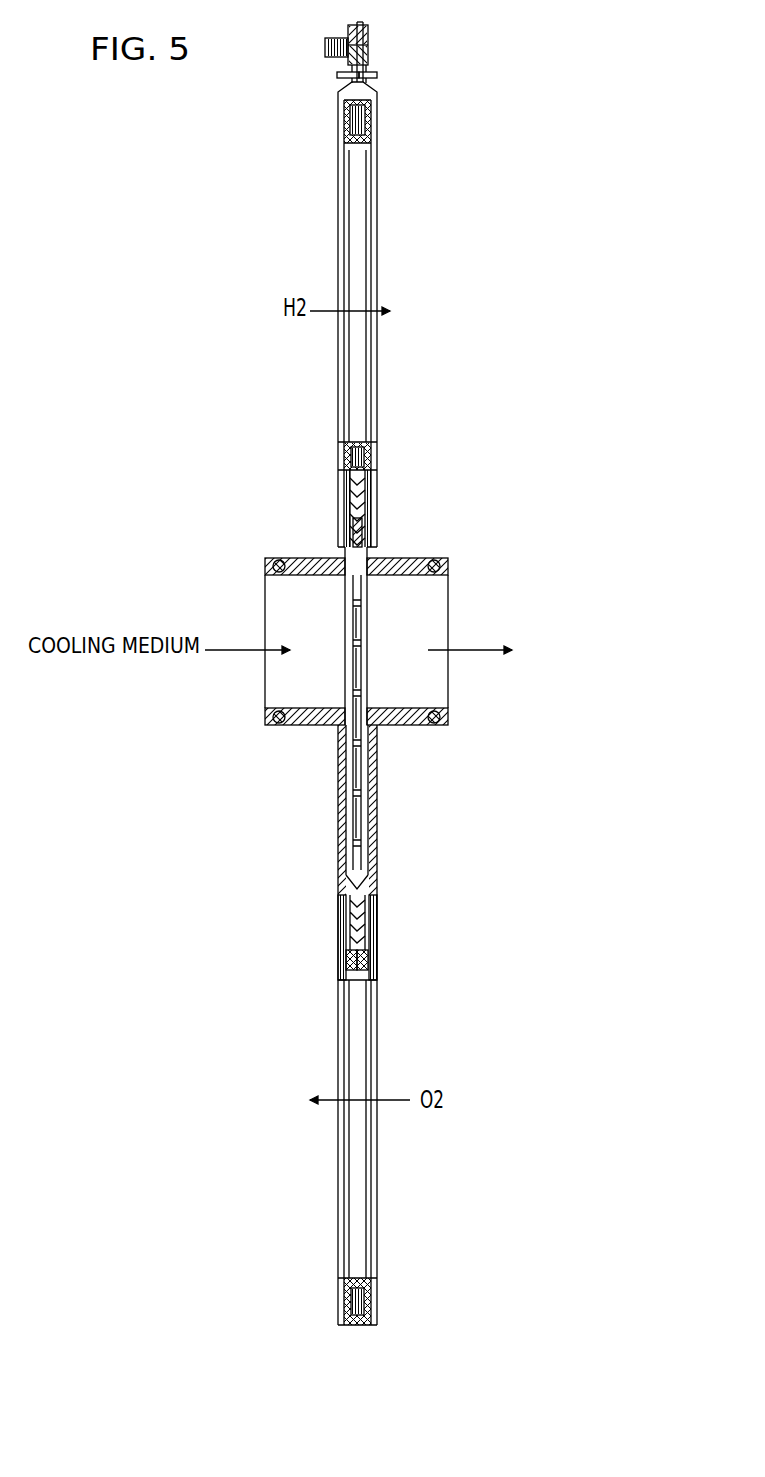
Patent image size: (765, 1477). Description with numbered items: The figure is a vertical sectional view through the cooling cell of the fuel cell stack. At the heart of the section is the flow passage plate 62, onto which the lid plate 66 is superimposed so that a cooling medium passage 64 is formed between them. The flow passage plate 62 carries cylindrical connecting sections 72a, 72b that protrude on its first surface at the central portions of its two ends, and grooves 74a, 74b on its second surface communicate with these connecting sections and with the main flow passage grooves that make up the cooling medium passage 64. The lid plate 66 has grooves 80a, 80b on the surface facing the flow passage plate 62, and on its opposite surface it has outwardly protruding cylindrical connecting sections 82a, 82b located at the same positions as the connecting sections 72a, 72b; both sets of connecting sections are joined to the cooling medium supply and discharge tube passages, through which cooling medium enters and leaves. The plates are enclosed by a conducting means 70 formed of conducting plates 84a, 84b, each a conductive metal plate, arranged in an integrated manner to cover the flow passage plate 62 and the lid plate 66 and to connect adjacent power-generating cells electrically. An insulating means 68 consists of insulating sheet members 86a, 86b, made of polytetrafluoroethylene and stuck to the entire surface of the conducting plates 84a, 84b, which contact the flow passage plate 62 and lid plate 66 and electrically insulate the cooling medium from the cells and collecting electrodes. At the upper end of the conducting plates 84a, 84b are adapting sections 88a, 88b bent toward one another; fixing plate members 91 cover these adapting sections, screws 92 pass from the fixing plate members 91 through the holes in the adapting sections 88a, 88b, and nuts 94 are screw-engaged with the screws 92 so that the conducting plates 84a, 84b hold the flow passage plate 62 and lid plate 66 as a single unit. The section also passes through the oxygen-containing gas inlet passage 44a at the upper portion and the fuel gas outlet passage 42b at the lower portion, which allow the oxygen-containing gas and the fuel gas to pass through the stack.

The nut 94 is at (343, 40).
The fixing plate member 91 is at (366, 26).
The screw 92 is at (368, 50).
The adapting section 88a is at (372, 75).
The adapting section 88b is at (341, 74).
The oxygen-containing gas inlet passage 44a is at (372, 166).
The insulating means 68 is at (360, 447).
The conducting means 70 is at (380, 476).
The connecting section 82a is at (291, 608).
The connecting section 82b is at (308, 560).
The connecting section 72a is at (420, 613).
The connecting section 72b is at (392, 568).
The groove 74a is at (454, 657).
The groove 74b is at (363, 598).
The groove 80a is at (261, 696).
The groove 80b is at (350, 680).
The cooling medium passage 64 is at (352, 622).
The lid plate 66 is at (338, 779).
The flow passage plate 62 is at (353, 852).
The insulating sheet member 86a is at (372, 932).
The insulating sheet member 86b is at (342, 930).
The conducting plate 84a is at (370, 962).
The conducting plate 84b is at (344, 962).
The fuel gas outlet passage 42b is at (372, 1020).